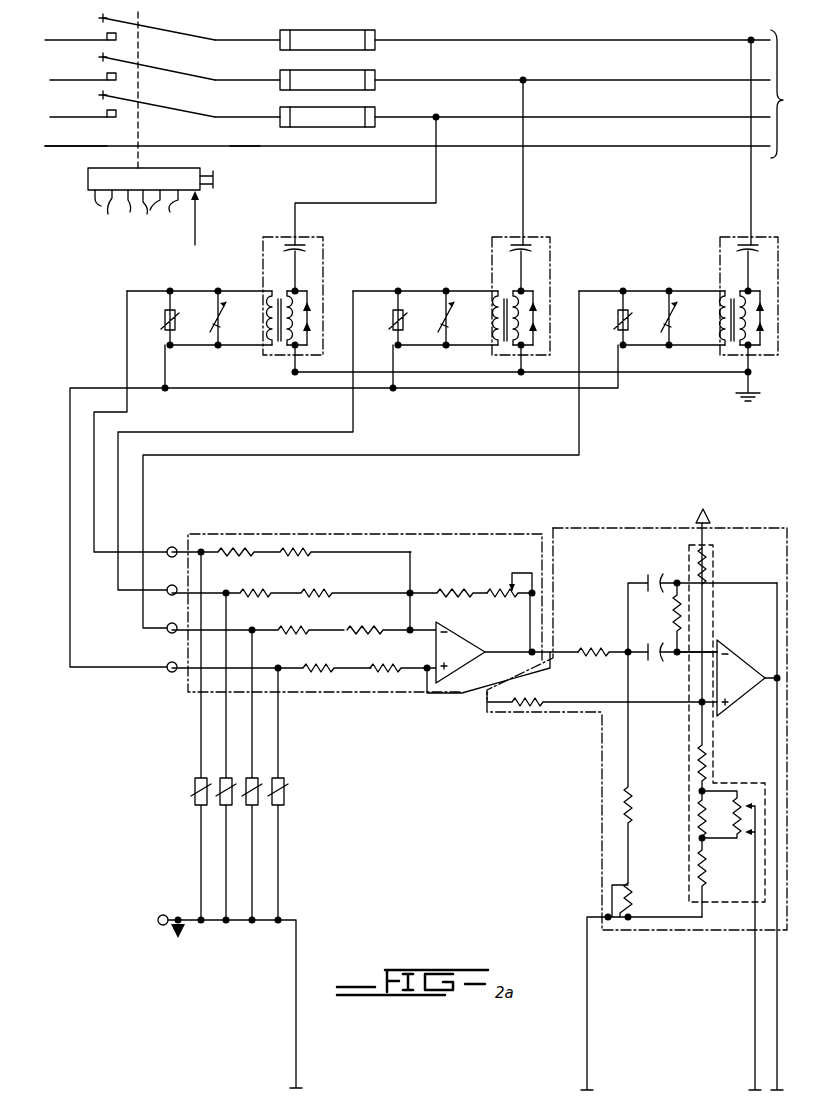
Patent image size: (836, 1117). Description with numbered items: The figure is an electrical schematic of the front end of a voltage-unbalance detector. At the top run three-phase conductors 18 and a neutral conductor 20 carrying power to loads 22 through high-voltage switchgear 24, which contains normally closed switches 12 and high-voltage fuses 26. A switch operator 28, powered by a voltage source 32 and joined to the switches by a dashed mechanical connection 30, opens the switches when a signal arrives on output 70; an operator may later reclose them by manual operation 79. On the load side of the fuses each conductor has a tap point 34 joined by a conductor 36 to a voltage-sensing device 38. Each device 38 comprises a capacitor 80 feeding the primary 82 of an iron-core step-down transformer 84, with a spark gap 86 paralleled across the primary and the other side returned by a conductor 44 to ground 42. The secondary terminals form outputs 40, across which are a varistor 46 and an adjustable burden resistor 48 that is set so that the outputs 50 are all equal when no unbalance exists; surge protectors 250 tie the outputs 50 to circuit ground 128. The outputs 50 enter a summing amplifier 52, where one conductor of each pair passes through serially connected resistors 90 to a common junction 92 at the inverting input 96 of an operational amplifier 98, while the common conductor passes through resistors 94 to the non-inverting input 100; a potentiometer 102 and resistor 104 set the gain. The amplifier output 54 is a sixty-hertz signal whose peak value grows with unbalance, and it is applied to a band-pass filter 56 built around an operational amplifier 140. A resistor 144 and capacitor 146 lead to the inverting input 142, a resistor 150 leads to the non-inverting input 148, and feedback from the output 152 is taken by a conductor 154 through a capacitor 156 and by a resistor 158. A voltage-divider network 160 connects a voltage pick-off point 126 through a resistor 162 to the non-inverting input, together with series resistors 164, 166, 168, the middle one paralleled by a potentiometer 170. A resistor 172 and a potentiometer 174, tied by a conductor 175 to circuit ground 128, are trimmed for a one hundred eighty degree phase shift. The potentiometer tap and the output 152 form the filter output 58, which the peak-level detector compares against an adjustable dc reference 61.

The switches 12 is at (144, 16).
The three-phase conductors 18 is at (87, 80).
The neutral conductor 20 is at (66, 127).
The loads 22 is at (424, 94).
The high-voltage switchgear 24 is at (243, 150).
The high-voltage fuses 26 is at (375, 30).
The switch operator 28 is at (88, 172).
The mechanical connection 30 is at (142, 128).
The voltage source 32 is at (218, 176).
The tap point 34 is at (474, 99).
The conductors 36 is at (523, 192).
The voltage-sensing devices 38 is at (334, 238).
The outputs 40 is at (244, 337).
The ground 42 is at (744, 403).
The conductors 44 is at (292, 360).
The varistors 46 is at (164, 316).
The adjustable burden resistors 48 is at (216, 312).
The outputs 50 is at (151, 354).
The summing amplifier 52 is at (452, 529).
The output 54 is at (494, 664).
The band-pass filter 56 is at (565, 528).
The output 58 is at (759, 935).
The adjustable dc reference 61 is at (751, 840).
The output 70 is at (156, 202).
The manual operation 79 is at (195, 226).
The capacitor 80 is at (362, 245).
The primary 82 is at (292, 294).
The iron-core step-down transformer 84 is at (278, 298).
The spark gap 86 is at (316, 313).
The resistors 90 is at (279, 550).
The common junction 92 is at (396, 628).
The resistors 94 is at (376, 668).
The inverting input 96 is at (439, 626).
The operational amplifier 98 is at (473, 644).
The non-inverting input 100 is at (426, 666).
The potentiometer 102 is at (506, 590).
The resistor 104 is at (464, 590).
The voltage pick-off point 126 is at (707, 516).
The circuit ground 128 is at (189, 942).
The operational amplifier 140 is at (776, 676).
The inverting input 142 is at (716, 643).
The resistor 144 is at (610, 660).
The capacitor 146 is at (654, 648).
The non-inverting input 148 is at (704, 710).
The resistor 150 is at (541, 700).
The output 152 is at (778, 694).
The conductor 154 is at (723, 583).
The capacitor 156 is at (648, 580).
The resistor 158 is at (674, 610).
The voltage-divider network 160 is at (692, 566).
The resistor 162 is at (707, 558).
The resistor 164 is at (694, 762).
The resistor 166 is at (696, 814).
The resistor 168 is at (696, 858).
The potentiometer 170 is at (742, 798).
The resistor 172 is at (632, 798).
The potentiometer 174 is at (636, 892).
The conductor 175 is at (604, 908).
The surge protectors 250 is at (222, 778).